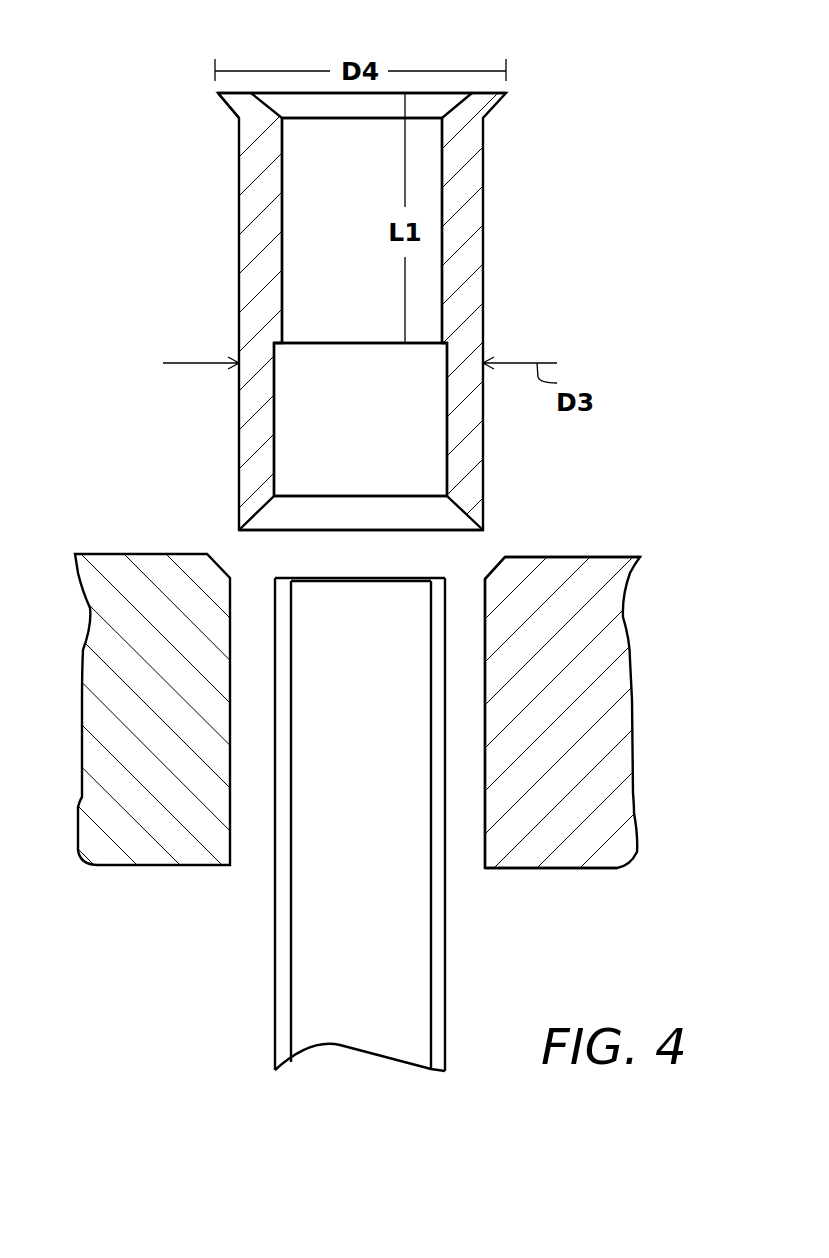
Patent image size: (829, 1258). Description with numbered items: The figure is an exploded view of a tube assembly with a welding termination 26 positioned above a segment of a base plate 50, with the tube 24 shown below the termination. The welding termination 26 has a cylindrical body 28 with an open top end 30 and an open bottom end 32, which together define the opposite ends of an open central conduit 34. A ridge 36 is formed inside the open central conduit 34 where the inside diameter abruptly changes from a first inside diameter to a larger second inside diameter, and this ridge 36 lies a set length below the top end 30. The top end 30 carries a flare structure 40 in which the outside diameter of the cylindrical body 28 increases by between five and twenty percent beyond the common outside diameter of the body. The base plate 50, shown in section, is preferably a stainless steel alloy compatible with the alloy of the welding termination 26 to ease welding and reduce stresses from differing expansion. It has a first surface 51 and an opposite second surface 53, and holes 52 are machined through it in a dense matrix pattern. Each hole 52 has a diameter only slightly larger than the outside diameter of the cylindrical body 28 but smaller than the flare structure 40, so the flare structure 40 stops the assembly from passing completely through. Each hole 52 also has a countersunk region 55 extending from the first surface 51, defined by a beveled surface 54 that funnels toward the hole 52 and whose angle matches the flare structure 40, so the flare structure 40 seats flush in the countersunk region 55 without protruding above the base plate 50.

The tube 24 is at (440, 958).
The welding termination 26 is at (483, 313).
The cylindrical body 28 is at (467, 240).
The top end 30 is at (485, 93).
The bottom end 32 is at (315, 530).
The open central conduit 34 is at (333, 227).
The ridge 36 is at (445, 343).
The flare structure 40 is at (218, 93).
The base plate 50 is at (618, 730).
The first surface 51 is at (570, 557).
The hole 52 is at (250, 810).
The second surface 53 is at (532, 868).
The beveled surface 54 is at (490, 574).
The countersunk region 55 is at (487, 580).